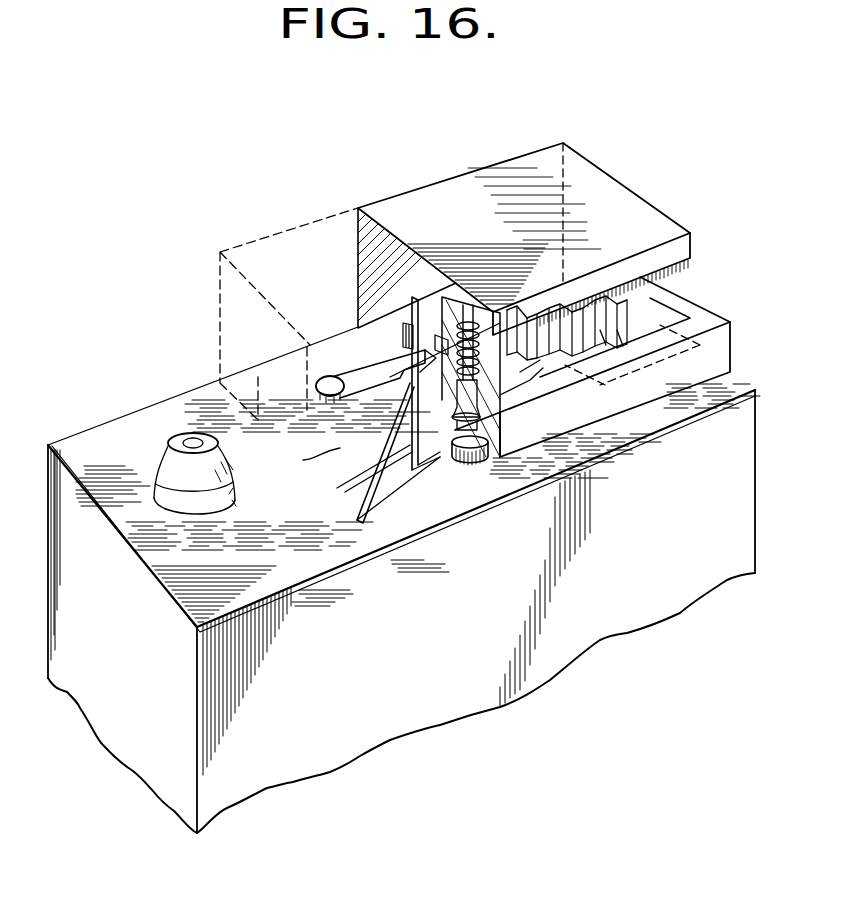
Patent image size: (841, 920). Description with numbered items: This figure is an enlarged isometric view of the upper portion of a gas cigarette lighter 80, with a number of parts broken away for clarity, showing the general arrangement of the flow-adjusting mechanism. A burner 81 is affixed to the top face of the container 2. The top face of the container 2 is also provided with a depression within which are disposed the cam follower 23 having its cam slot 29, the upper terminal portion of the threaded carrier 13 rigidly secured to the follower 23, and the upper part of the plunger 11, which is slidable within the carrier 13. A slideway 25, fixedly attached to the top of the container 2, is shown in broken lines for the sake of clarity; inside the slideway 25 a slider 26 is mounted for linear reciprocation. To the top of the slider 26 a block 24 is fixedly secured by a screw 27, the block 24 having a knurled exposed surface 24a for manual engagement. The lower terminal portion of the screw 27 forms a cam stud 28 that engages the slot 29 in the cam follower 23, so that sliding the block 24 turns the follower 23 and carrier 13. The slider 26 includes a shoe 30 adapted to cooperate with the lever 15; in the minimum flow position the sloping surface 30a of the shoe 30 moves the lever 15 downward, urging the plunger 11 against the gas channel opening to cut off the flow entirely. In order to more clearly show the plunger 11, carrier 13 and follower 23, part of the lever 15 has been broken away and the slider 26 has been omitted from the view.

The container 2 is at (311, 460).
The plunger 11 is at (443, 343).
The threaded carrier 13 is at (350, 426).
The lever 15 is at (372, 365).
The cam follower plate 23 is at (355, 476).
The block 24 is at (473, 330).
The knurled exposed surface 24a is at (538, 376).
The slideway 25 is at (385, 205).
The slider 26 is at (483, 457).
The screw 27 is at (465, 323).
The cam stud 28 is at (452, 440).
The cam slot 29 is at (435, 445).
The shoe 30 is at (537, 305).
The sloping surface 30a is at (628, 325).
The gas cigarette lighter 80 is at (160, 381).
The burner 81 is at (162, 462).